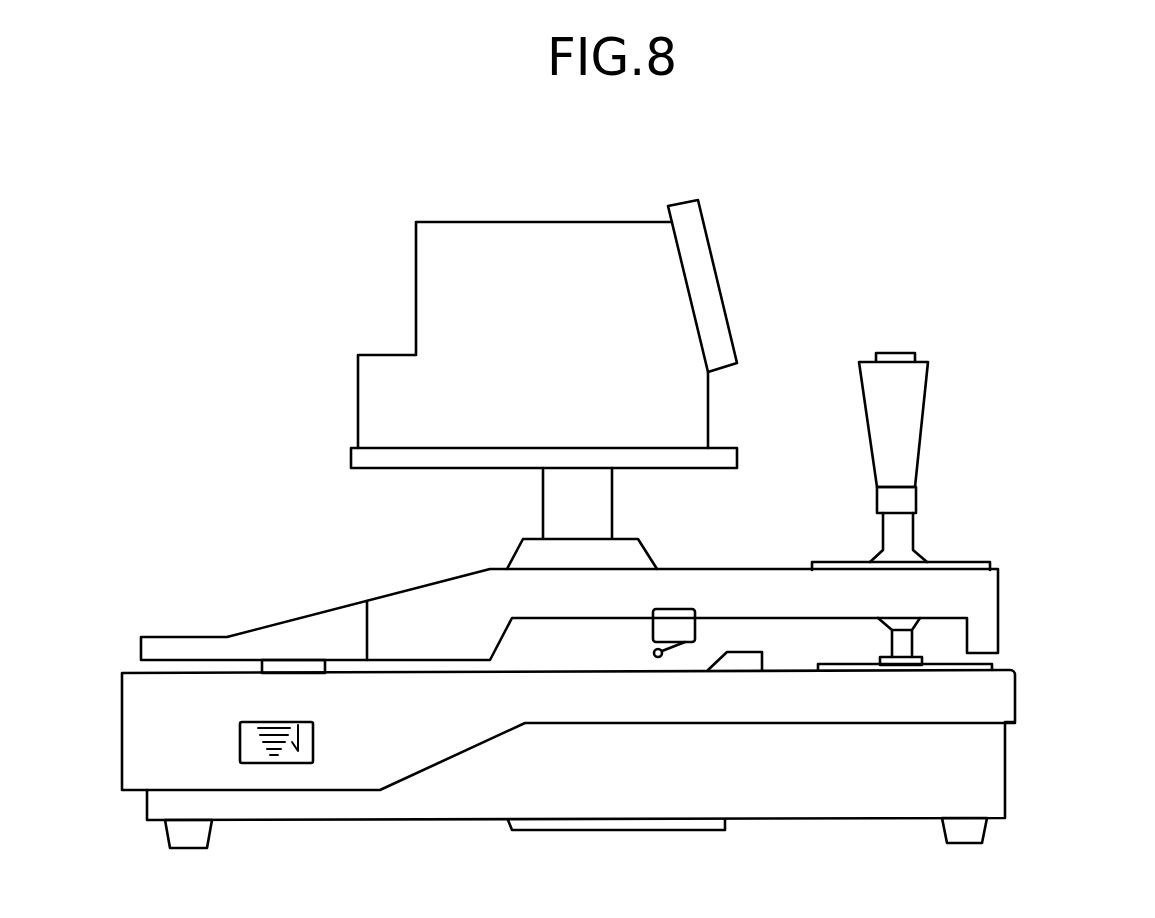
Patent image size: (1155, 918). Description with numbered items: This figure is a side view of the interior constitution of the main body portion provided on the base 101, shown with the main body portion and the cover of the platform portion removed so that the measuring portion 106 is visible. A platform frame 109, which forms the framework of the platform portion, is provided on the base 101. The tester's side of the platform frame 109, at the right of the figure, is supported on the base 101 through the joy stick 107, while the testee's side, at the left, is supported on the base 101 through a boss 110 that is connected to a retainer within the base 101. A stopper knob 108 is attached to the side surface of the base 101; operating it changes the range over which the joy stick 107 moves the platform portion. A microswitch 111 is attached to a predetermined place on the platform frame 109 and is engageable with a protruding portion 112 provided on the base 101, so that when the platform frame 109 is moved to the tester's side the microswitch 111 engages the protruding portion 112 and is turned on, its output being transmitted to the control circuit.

The base 101 is at (992, 698).
The measuring portion 106 is at (703, 287).
The joy stick 107 is at (912, 422).
The stopper knob 108 is at (257, 755).
The platform frame 109 is at (985, 597).
The boss 110 is at (285, 665).
The microswitch 111 is at (680, 633).
The protruding portion 112 is at (743, 665).